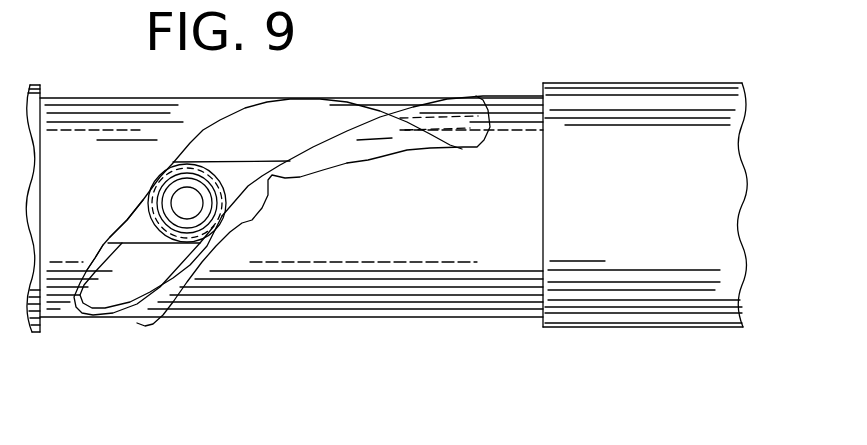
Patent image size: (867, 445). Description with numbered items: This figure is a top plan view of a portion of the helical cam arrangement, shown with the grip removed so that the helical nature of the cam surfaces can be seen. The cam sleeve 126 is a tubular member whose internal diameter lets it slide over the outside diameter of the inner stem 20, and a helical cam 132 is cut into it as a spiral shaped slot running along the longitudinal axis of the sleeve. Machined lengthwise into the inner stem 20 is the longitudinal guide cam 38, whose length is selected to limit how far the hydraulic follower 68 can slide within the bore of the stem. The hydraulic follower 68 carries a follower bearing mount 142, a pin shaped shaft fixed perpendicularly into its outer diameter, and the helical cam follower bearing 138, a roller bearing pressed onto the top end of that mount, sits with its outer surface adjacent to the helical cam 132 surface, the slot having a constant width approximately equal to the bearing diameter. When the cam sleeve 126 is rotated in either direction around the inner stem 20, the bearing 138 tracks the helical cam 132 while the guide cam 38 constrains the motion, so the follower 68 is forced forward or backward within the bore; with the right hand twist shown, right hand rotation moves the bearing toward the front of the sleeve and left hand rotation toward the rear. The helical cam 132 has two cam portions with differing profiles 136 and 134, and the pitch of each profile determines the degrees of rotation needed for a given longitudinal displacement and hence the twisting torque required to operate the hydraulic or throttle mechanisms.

The inner stem 20 is at (289, 123).
The longitudinal guide cam 38 is at (100, 260).
The hydraulic follower 68 is at (140, 220).
The cam sleeve 126 is at (514, 96).
The helical cam surface 132 is at (347, 103).
The cam profile portion 134 is at (242, 222).
The cam profile portion 136 is at (367, 160).
The helical cam follower bearing 138 is at (157, 233).
The follower bearing mount 142 is at (193, 198).